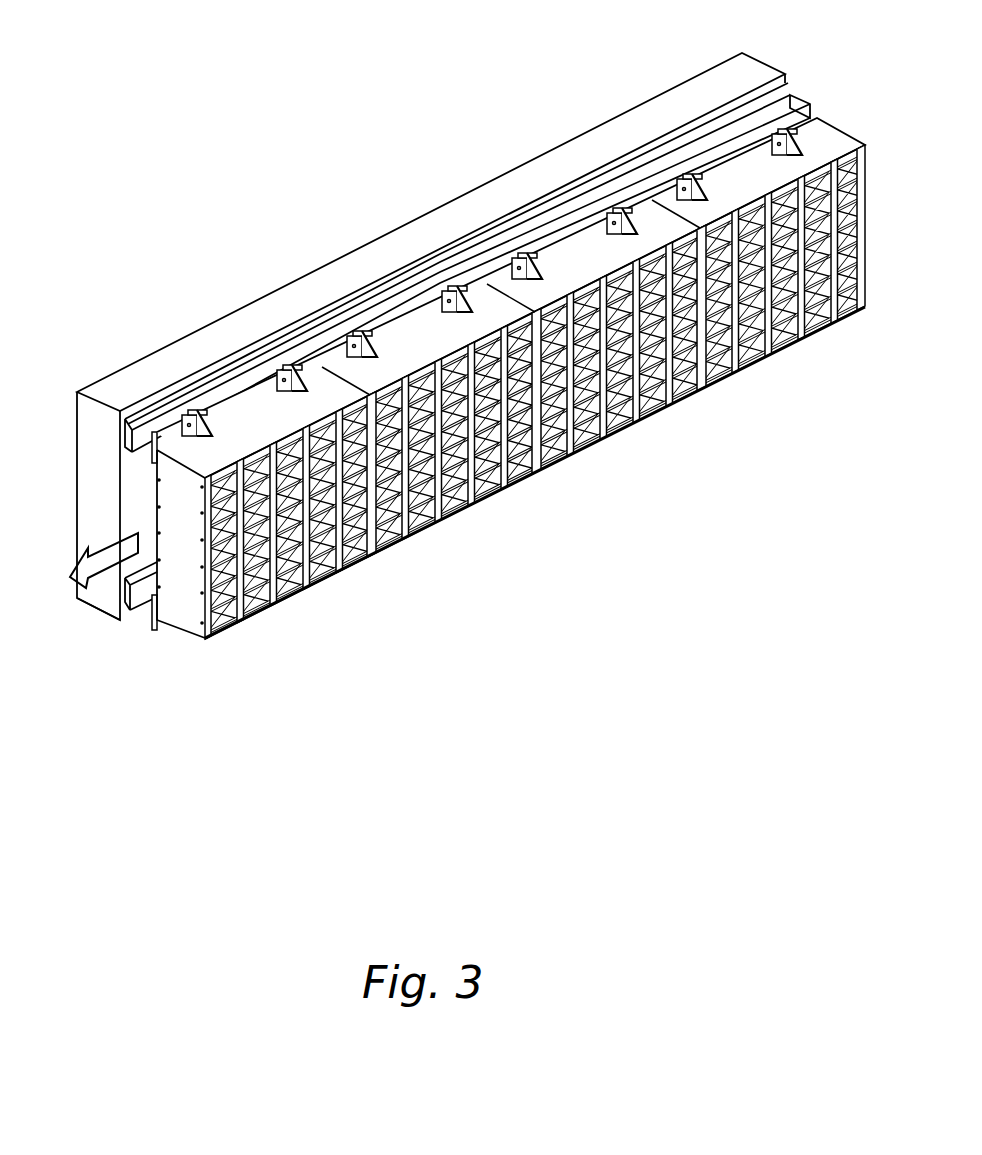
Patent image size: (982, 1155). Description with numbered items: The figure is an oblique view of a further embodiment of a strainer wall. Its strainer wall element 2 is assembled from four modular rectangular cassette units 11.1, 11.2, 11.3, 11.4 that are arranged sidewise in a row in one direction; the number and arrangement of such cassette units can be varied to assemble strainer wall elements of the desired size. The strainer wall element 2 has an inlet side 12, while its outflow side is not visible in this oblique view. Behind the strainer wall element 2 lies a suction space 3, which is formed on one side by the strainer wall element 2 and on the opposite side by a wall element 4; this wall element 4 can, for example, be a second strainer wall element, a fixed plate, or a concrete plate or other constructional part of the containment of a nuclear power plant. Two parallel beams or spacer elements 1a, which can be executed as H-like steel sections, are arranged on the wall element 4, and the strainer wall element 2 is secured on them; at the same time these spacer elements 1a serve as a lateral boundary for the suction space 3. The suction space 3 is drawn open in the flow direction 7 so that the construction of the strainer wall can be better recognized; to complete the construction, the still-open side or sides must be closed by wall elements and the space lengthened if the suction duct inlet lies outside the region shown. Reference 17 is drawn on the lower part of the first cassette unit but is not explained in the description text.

The strainer wall element 2 is at (507, 370).
The suction space 3 is at (132, 496).
The wall element 4 is at (97, 608).
The flow direction 7 is at (64, 579).
The beam and/or spacer element 1a is at (145, 608).
The bottom rail 17 is at (218, 600).
The cassette unit 11.1 is at (290, 511).
The cassette unit 11.2 is at (462, 428).
The cassette unit 11.3 is at (627, 345).
The cassette unit 11.4 is at (789, 276).
The inlet side 12 is at (484, 417).